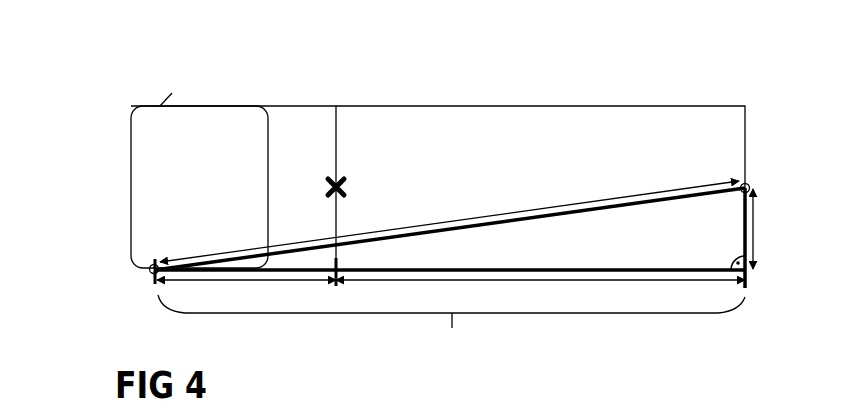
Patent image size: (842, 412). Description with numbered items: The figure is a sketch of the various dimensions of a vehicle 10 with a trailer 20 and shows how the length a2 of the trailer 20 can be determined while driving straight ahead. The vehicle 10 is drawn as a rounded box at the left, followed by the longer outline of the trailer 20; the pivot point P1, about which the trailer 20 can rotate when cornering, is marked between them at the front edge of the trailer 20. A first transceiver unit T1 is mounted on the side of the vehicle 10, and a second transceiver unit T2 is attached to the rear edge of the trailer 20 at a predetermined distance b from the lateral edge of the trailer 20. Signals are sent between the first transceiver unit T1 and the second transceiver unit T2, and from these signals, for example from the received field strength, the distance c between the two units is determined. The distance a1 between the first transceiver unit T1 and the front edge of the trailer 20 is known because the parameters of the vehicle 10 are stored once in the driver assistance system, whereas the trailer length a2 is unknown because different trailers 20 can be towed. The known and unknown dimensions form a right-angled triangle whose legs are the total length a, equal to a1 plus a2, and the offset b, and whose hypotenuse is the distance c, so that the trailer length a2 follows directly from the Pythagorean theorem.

The vehicle 10 is at (131, 153).
The trailer 20 is at (513, 106).
The pivot point P1 is at (322, 196).
The first transceiver unit T1 is at (140, 288).
The second transceiver unit T2 is at (761, 171).
The total length a is at (451, 324).
The length of the vehicle a1 is at (246, 296).
The length of the trailer a2 is at (540, 296).
The predetermined distance b is at (763, 229).
The distance between the transceiver units c is at (450, 225).